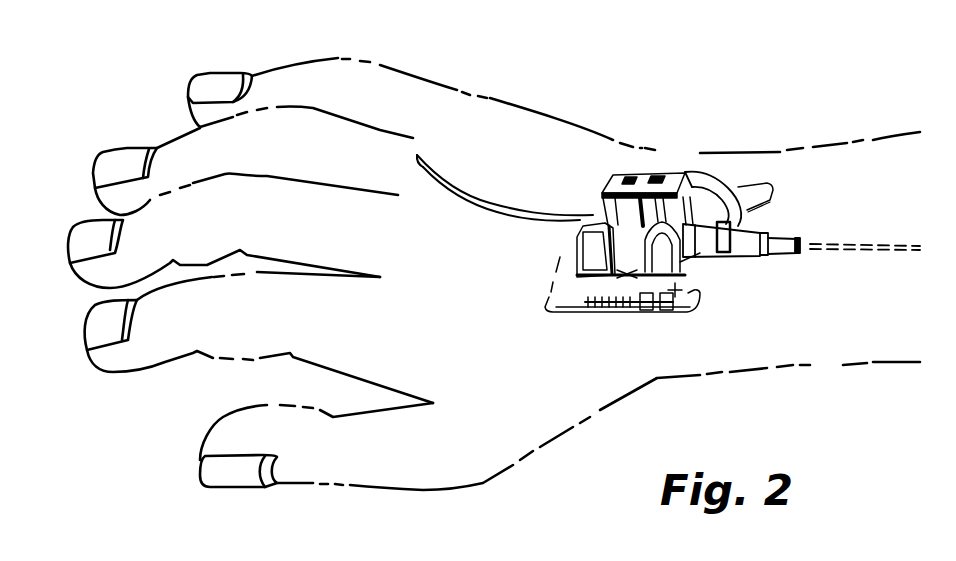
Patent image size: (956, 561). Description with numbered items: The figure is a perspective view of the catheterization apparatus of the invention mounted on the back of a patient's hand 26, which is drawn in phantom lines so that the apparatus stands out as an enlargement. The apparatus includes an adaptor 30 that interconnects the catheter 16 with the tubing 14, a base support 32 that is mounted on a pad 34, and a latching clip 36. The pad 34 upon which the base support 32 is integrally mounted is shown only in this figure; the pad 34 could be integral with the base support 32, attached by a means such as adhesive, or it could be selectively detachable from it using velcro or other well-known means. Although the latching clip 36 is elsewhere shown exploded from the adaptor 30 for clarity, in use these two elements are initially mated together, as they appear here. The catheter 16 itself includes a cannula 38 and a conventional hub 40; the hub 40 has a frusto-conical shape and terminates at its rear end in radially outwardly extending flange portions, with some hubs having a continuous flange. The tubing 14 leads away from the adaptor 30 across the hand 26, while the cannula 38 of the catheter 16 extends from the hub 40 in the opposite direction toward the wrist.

The patient's hand 26 is at (438, 82).
The tubing 14 is at (457, 183).
The adaptor 30 is at (663, 168).
The base support 32 is at (566, 255).
The pad 34 is at (700, 291).
The latching clip 36 is at (710, 168).
The hub 40 is at (737, 254).
The catheter 16 is at (794, 234).
The cannula 38 is at (828, 256).